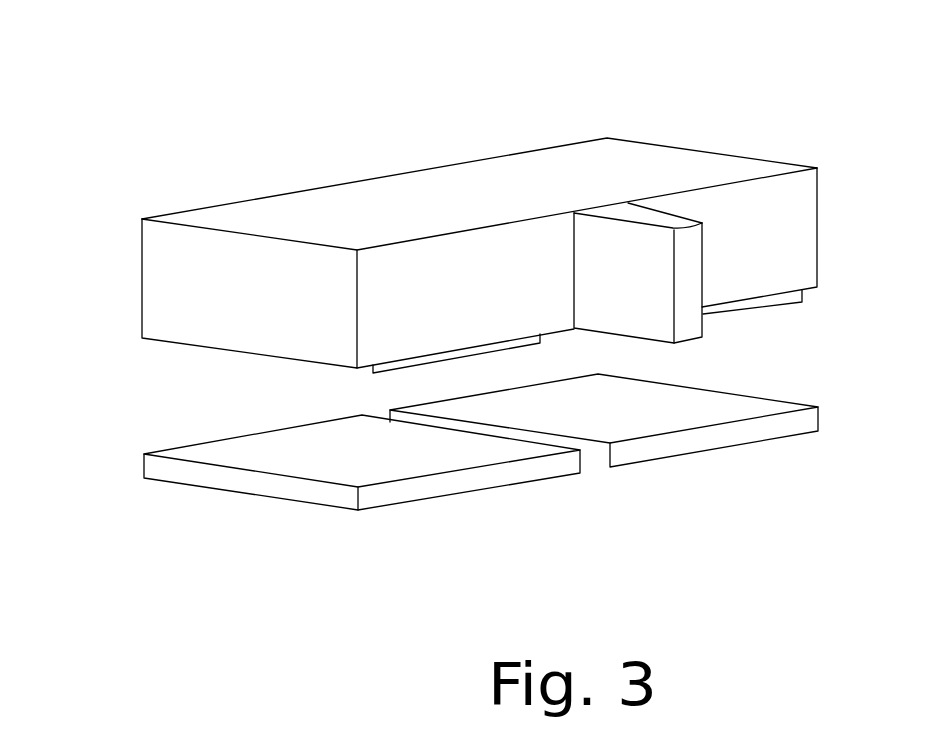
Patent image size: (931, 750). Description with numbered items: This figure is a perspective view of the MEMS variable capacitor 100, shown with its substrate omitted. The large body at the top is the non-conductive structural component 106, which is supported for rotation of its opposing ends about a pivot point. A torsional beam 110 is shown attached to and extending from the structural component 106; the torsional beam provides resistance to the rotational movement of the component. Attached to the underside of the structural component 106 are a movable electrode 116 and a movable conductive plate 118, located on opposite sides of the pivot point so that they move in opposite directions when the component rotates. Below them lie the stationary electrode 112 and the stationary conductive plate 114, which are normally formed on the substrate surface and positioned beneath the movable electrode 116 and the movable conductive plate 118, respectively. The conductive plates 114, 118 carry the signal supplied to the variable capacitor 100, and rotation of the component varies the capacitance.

The variable capacitor 100 is at (162, 150).
The structural component 106 is at (142, 298).
The torsional beam 110 is at (703, 337).
The stationary electrode 112 is at (178, 448).
The stationary conductive plate 114 is at (783, 437).
The movable electrode 116 is at (383, 368).
The movable conductive plate 118 is at (790, 302).